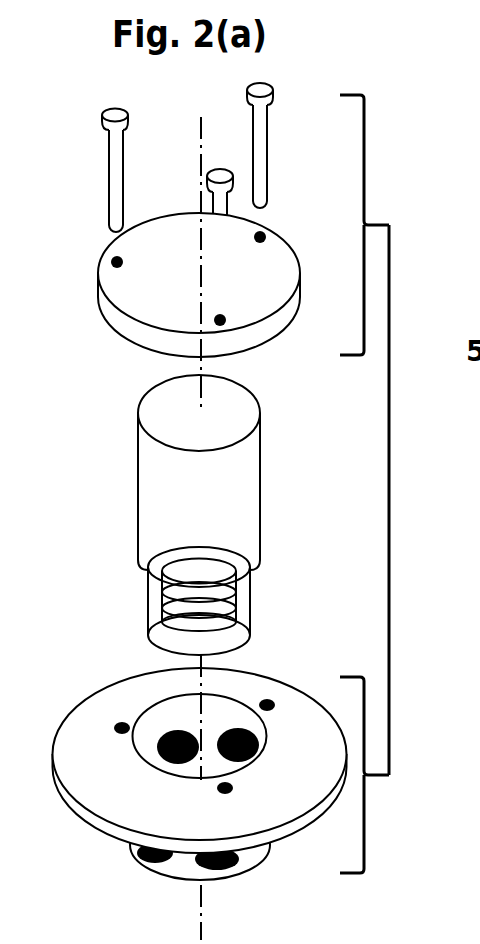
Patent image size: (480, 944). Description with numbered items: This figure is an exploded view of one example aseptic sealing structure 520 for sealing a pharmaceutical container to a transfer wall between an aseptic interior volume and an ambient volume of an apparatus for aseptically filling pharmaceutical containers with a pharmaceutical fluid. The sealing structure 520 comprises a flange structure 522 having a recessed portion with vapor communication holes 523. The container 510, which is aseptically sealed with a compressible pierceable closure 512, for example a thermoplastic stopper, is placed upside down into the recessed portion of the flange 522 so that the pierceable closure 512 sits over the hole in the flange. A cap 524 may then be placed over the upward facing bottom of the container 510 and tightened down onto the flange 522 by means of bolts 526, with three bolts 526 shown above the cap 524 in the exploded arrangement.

The container 510 is at (157, 465).
The compressible pierceable closure 512 is at (238, 635).
The sealing structure 520 is at (389, 516).
The flange structure 522 is at (125, 833).
The vapor communication holes 523 is at (178, 737).
The cap 524 is at (112, 313).
The bolts 526 is at (117, 175).